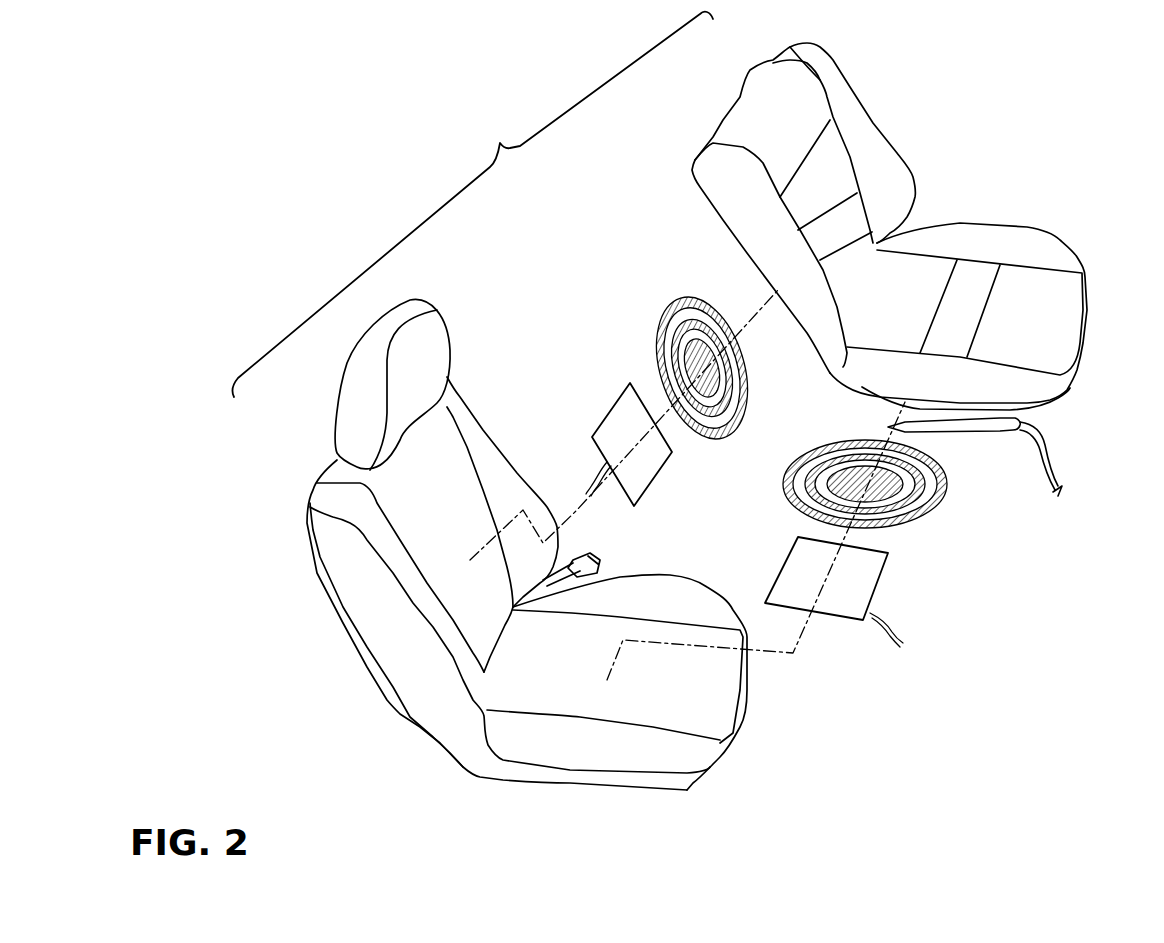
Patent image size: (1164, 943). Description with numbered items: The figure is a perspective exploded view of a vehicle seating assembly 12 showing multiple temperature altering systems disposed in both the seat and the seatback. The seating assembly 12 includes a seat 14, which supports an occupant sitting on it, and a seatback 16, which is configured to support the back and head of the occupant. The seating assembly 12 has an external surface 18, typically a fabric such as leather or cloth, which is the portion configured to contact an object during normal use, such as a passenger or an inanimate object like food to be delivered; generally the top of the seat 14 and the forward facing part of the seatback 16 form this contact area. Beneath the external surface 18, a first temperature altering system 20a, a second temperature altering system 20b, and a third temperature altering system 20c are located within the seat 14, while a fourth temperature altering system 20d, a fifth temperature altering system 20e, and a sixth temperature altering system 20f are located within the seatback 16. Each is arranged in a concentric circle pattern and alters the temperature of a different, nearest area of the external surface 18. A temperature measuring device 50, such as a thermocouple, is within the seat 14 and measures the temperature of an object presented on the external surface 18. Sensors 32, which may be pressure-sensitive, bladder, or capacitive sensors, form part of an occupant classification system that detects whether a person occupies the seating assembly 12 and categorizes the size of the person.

The seating assembly 12 is at (473, 204).
The seat 14 is at (703, 703).
The seatback 16 is at (360, 577).
The external surface 18 is at (830, 153).
The first temperature altering system 20a is at (898, 487).
The second temperature altering system 20b is at (922, 480).
The third temperature altering system 20c is at (918, 455).
The fourth temperature altering system 20d is at (700, 335).
The fifth temperature altering system 20e is at (680, 322).
The sixth temperature altering system 20f is at (663, 324).
The sensors 32 is at (620, 430).
The temperature measuring device 50 is at (1003, 422).